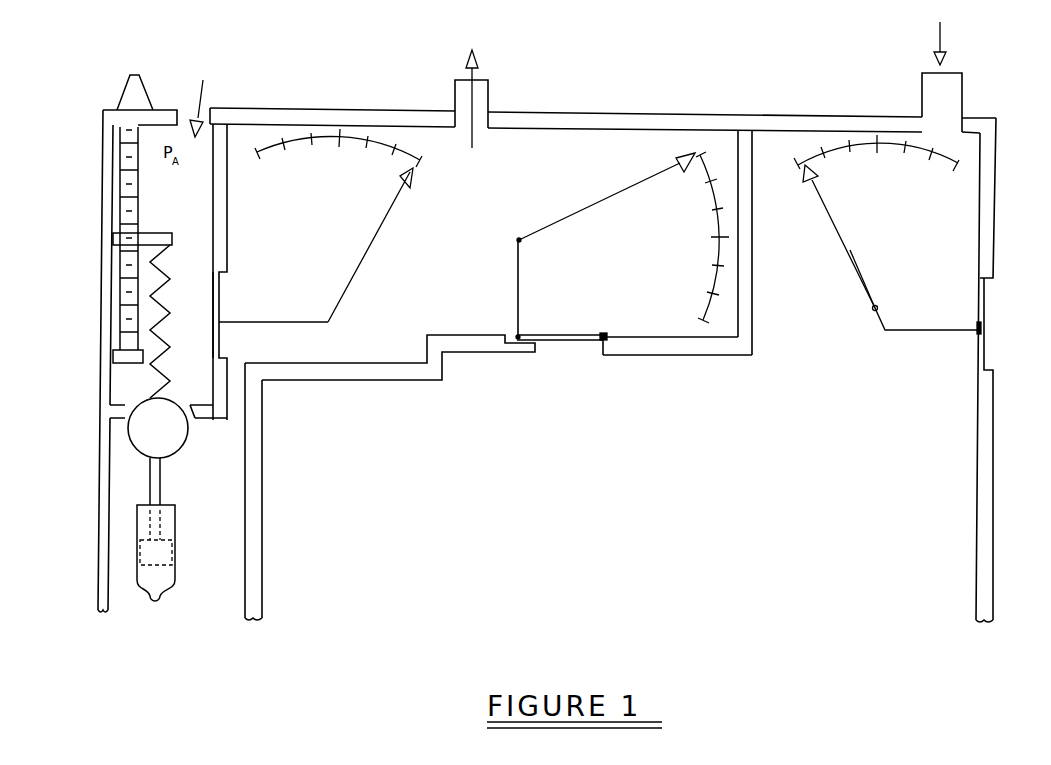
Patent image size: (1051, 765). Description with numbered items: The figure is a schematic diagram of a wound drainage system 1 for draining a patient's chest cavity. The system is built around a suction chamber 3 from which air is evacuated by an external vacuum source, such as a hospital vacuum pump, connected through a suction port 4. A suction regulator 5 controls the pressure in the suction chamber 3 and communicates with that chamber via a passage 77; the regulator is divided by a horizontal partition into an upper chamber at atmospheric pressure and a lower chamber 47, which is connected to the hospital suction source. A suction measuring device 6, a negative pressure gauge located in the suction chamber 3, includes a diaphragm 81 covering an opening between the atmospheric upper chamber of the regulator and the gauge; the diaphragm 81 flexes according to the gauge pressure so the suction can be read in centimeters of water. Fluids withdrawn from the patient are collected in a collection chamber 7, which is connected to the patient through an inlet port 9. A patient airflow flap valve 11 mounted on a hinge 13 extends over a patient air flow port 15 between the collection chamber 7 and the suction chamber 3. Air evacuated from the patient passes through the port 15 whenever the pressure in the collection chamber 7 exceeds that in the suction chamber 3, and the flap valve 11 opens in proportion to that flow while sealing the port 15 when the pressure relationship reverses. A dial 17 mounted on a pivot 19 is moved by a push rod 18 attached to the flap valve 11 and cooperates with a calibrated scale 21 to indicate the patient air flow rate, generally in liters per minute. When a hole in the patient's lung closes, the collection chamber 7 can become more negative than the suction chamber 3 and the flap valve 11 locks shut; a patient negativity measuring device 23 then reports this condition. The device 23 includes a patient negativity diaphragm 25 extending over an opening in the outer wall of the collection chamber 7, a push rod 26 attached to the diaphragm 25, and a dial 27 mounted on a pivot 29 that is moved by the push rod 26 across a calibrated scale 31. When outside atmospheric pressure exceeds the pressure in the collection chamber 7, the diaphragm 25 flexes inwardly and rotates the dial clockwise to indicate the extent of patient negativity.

The wound drainage system 1 is at (733, 76).
The suction chamber 3 is at (504, 189).
The suction port 4 is at (488, 103).
The suction regulator 5 is at (156, 78).
The suction measuring device 6 is at (405, 210).
The collection chamber 7 is at (648, 491).
The inlet port 9 is at (920, 102).
The patient airflow flap valve 11 is at (546, 334).
The hinge 13 is at (606, 335).
The patient air flow port 15 is at (520, 355).
The dial 17 is at (584, 204).
The push rod 18 is at (515, 262).
The pivot 19 is at (534, 228).
The calibrated scale 21 is at (700, 150).
The patient negativity measuring device 23 is at (842, 255).
The patient negativity diaphragm 25 is at (988, 290).
The push rod 26 is at (928, 312).
The dial 27 is at (864, 279).
The pivot 29 is at (880, 308).
The calibrated scale 31 is at (796, 170).
The lower chamber 47 is at (216, 505).
The passage 77 is at (230, 395).
The diaphragm 81 is at (208, 324).